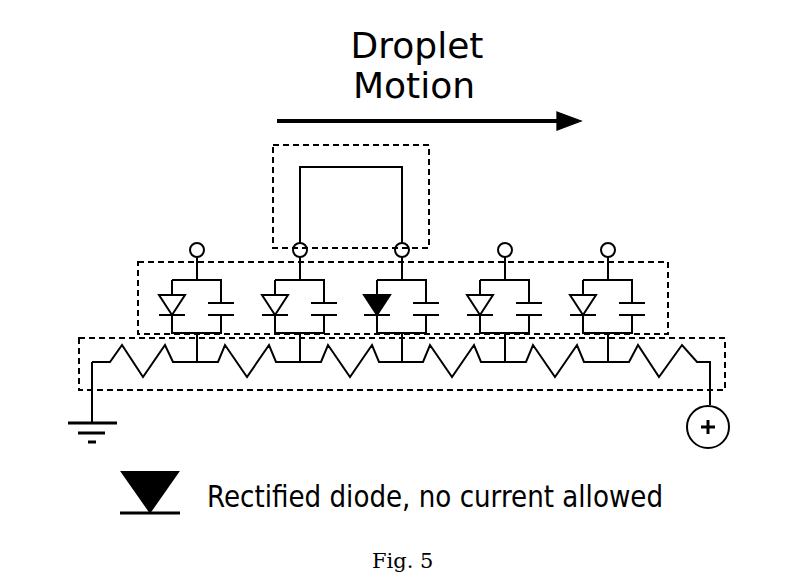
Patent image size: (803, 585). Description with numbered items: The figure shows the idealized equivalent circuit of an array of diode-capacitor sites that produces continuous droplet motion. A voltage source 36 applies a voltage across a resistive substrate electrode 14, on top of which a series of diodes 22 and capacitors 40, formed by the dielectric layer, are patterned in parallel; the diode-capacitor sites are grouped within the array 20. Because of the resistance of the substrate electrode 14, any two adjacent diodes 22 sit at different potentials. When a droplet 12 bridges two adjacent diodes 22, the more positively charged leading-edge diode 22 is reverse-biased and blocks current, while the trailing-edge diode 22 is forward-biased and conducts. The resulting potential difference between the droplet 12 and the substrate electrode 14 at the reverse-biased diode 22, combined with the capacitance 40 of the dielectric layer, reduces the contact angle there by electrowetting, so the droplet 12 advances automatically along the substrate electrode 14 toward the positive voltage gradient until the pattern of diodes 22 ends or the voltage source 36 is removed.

The droplet 12 is at (429, 196).
The substrate electrode 14 is at (78, 345).
The electrode array 20 is at (668, 280).
The diode 22 is at (165, 294).
The voltage source 36 is at (730, 427).
The capacitor 40 is at (230, 302).